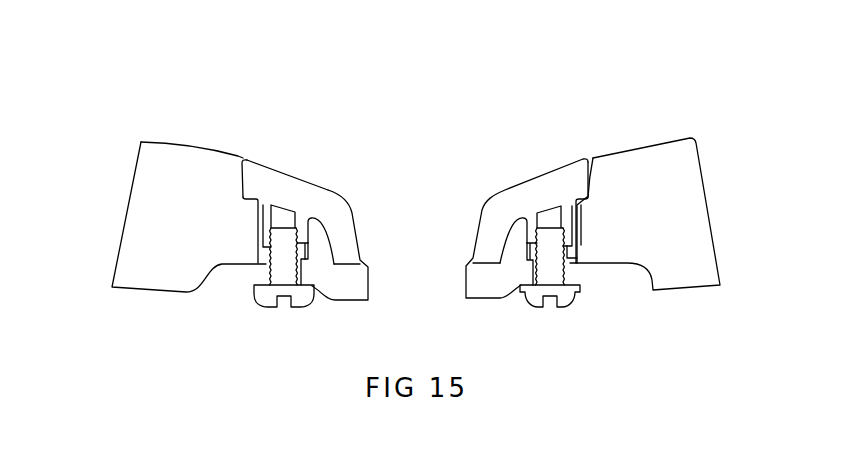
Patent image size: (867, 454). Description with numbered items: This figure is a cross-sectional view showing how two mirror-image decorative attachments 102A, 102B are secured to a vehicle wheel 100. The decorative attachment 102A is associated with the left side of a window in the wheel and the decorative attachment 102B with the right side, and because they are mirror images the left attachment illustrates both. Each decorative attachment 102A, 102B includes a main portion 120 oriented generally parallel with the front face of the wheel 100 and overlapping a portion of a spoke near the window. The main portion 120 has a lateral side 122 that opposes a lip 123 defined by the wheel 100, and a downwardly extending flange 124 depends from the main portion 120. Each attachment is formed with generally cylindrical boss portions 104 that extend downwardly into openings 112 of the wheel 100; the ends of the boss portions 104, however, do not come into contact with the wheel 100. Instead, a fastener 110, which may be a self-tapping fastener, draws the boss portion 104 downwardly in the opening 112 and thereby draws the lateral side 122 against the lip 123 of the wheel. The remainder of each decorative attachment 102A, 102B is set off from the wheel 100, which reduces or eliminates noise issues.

The wheel 100 is at (162, 256).
The decorative attachment 102A is at (218, 151).
The decorative attachment 102B is at (531, 179).
The boss portion 104 is at (259, 237).
The fastener 110 is at (274, 306).
The opening 112 is at (580, 252).
The main portion 120 is at (286, 175).
The lateral side 122 is at (247, 158).
The lip 123 is at (243, 198).
The downwardly extending flange 124 is at (403, 138).